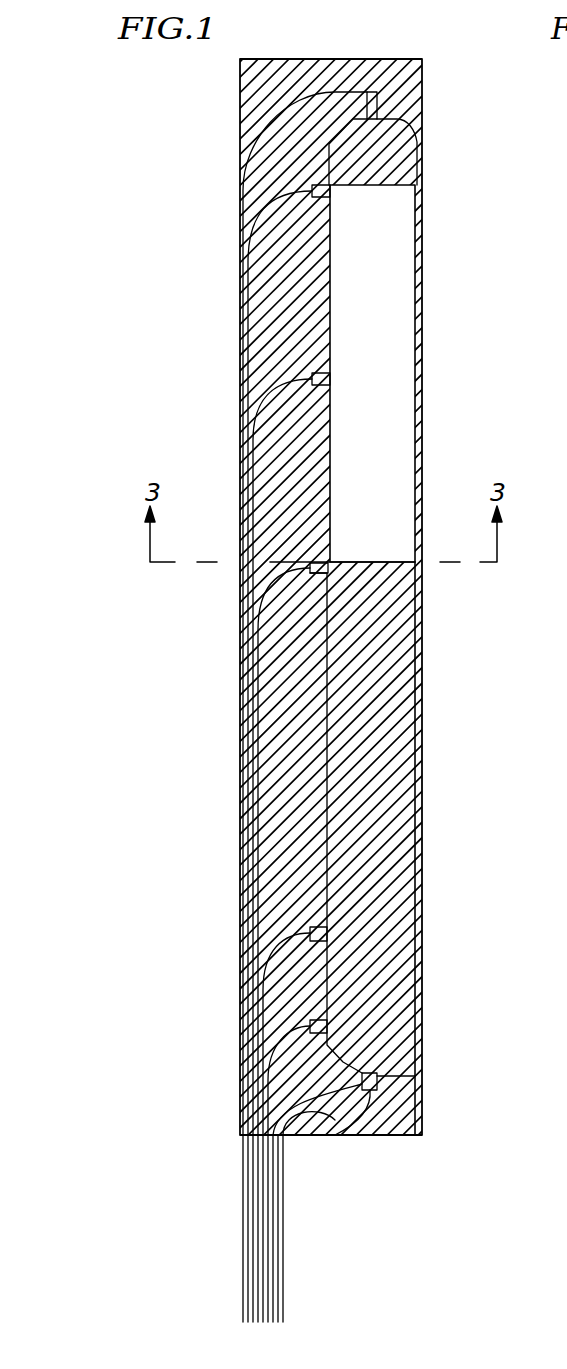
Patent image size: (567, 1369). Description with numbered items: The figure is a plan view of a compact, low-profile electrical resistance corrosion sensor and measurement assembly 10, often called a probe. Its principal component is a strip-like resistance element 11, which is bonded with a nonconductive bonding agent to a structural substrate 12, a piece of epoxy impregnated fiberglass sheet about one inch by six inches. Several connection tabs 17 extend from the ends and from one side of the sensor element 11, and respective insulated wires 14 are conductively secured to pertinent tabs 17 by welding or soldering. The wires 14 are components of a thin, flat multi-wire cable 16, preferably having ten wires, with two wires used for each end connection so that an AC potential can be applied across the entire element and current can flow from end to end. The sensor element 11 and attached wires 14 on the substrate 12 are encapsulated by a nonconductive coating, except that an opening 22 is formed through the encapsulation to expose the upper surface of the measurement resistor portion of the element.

The electrical resistance corrosion sensor and measurement assembly 10 is at (177, 277).
The resistance element 11 is at (421, 678).
The structural substrate 12 is at (422, 1108).
The insulated wires 14 is at (262, 128).
The multi-wire cable 16 is at (265, 1282).
The connection tabs 17 is at (312, 191).
The opening 22 is at (425, 228).